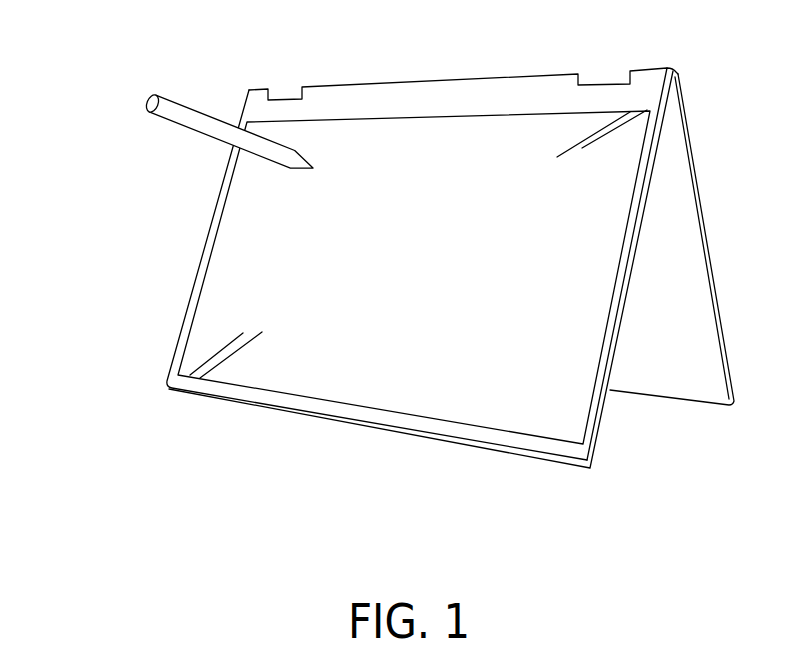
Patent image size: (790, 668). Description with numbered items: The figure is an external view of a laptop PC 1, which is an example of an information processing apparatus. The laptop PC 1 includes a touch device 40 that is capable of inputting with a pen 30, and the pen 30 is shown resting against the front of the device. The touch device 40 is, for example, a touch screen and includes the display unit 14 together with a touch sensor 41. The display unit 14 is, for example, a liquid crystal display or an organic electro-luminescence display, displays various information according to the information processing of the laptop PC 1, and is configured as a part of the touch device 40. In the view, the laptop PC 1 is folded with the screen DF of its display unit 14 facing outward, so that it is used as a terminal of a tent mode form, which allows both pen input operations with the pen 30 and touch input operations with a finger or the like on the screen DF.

The laptop PC 1 is at (383, 242).
The pen 30 is at (207, 120).
The touch device 40 is at (268, 265).
The display unit 14 is at (371, 277).
The touch sensor 41 is at (371, 277).
The screen DF is at (208, 317).